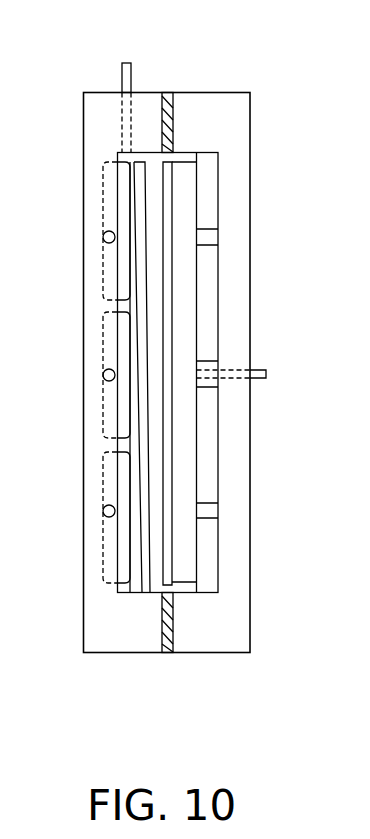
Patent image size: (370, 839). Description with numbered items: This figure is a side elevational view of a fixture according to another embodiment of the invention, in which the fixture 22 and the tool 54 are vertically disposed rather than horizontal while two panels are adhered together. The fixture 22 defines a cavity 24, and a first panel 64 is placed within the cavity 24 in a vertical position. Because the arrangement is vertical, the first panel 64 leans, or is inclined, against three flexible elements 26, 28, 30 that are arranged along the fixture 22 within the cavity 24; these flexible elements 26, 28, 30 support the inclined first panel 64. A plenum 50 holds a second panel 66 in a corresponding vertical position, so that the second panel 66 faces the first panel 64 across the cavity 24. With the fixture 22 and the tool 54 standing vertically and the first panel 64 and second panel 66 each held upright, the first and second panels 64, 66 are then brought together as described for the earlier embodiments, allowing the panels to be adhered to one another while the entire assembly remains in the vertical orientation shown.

The fixture 22 is at (105, 654).
The cavity 24 is at (155, 180).
The flexible element 26 is at (122, 260).
The flexible element 28 is at (122, 409).
The flexible element 30 is at (122, 560).
The plenum 50 is at (201, 309).
The tool 54 is at (200, 654).
The first panel 64 is at (137, 170).
The second panel 66 is at (167, 180).